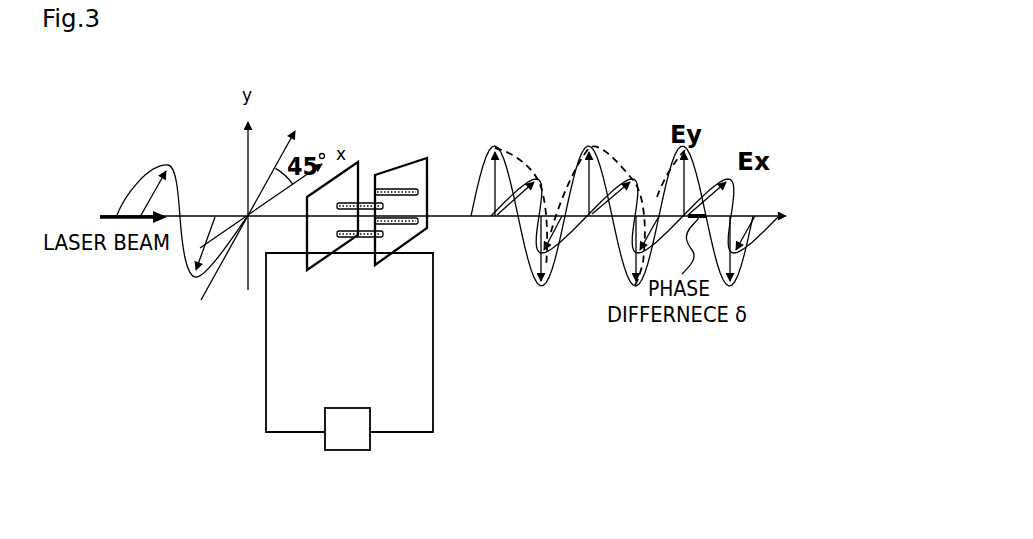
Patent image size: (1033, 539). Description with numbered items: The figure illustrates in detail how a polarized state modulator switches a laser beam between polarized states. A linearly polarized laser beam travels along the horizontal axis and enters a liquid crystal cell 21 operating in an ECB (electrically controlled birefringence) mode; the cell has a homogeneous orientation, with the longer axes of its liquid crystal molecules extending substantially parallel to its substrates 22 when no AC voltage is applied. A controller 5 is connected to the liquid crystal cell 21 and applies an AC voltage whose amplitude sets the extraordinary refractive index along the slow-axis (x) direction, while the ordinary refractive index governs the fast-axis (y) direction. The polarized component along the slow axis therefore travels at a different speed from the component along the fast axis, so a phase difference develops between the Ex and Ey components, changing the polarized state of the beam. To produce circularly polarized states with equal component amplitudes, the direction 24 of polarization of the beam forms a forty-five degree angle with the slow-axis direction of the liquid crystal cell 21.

The controller 5 is at (337, 450).
The liquid crystal cell 21 is at (437, 248).
The substrates 22 is at (364, 174).
The direction of polarization 24 is at (203, 300).